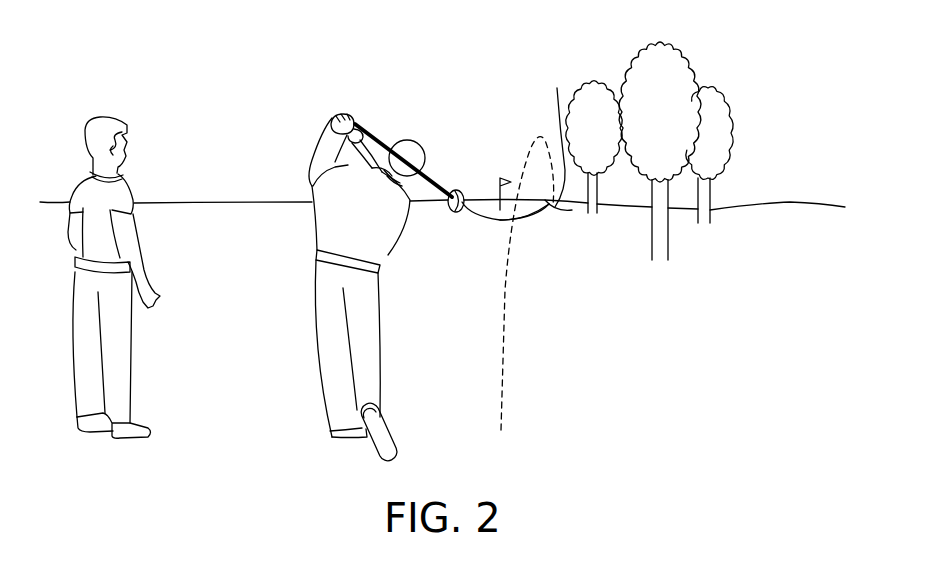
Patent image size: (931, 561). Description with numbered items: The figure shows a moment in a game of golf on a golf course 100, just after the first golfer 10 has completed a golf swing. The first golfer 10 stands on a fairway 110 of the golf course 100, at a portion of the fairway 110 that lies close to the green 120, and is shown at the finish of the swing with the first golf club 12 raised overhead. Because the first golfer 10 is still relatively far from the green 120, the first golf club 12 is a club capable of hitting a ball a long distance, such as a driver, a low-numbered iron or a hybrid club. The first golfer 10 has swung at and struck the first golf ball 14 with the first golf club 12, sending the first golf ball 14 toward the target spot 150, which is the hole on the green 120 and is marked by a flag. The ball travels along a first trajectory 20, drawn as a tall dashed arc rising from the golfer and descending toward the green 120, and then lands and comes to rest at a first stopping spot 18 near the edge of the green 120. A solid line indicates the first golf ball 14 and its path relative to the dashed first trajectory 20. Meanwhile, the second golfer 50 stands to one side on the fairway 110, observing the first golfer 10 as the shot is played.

The first golfer 10 is at (427, 133).
The first golf club 12 is at (376, 136).
The first golf ball 14 is at (560, 134).
The first stopping spot 18 is at (553, 203).
The first trajectory 20 is at (502, 337).
The second golfer 50 is at (95, 111).
The golf course 100 is at (778, 178).
The fairway 110 is at (548, 305).
The green 120 is at (522, 212).
The target spot 150 is at (497, 210).